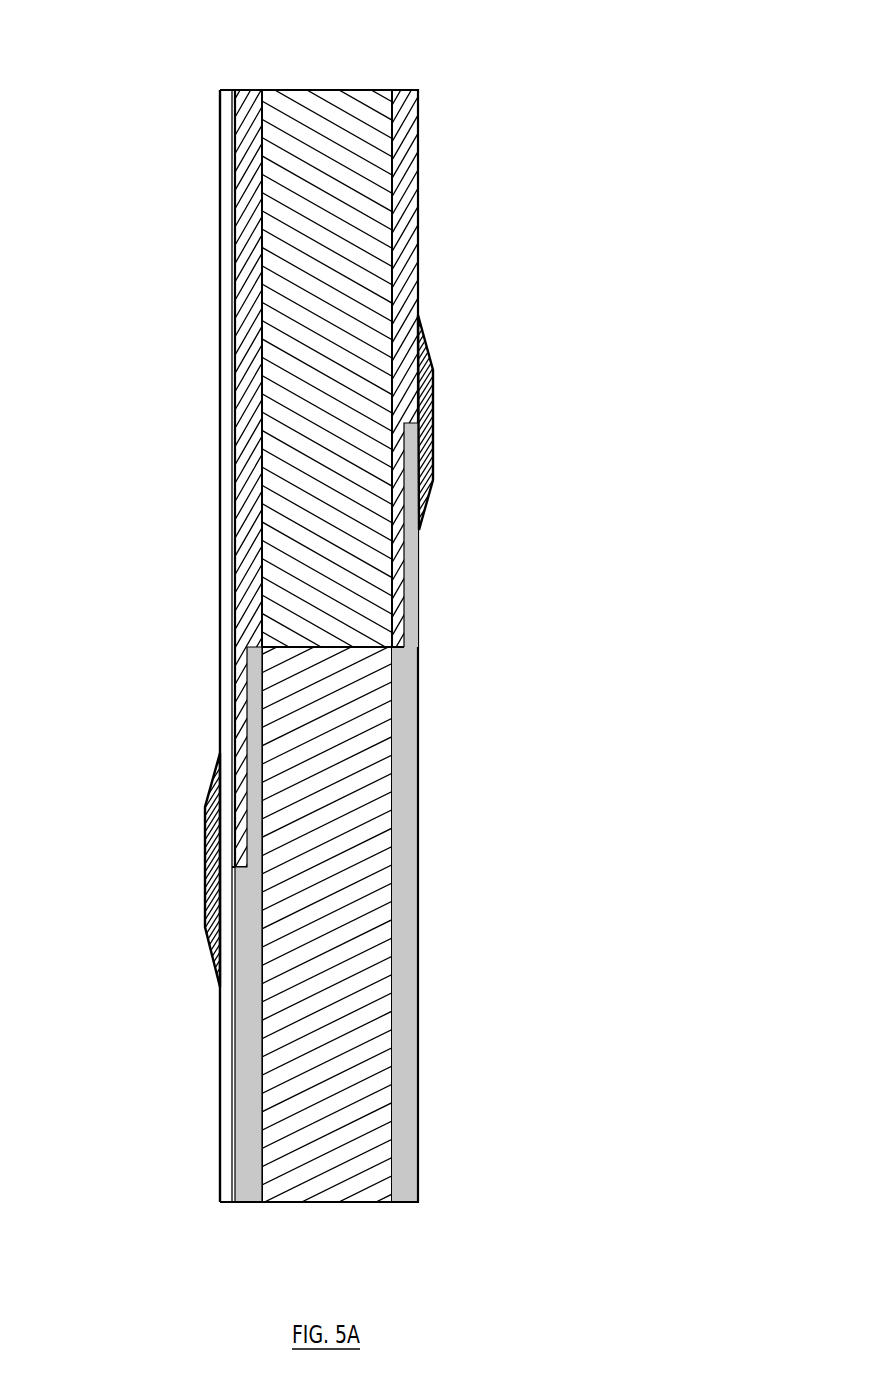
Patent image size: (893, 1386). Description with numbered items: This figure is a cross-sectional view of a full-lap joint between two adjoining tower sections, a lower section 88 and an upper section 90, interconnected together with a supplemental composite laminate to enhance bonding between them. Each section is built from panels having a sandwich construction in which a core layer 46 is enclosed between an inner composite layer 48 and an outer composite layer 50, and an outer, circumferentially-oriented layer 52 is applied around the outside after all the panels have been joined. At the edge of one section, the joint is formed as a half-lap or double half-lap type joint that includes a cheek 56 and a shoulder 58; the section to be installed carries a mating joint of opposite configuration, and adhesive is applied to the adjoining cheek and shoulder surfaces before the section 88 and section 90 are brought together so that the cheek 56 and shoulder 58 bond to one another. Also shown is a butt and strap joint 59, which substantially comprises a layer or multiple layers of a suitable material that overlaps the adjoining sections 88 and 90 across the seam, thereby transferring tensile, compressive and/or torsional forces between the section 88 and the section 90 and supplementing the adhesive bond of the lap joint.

The core layer 46 is at (346, 148).
The inner composite layer 48 is at (413, 1139).
The outer composite layer 50 is at (257, 1160).
The outer circumferentially-oriented layer 52 is at (227, 687).
The cheek 56 is at (232, 628).
The shoulder 58 is at (347, 650).
The butt and strap joint 59 is at (436, 424).
The section 88 is at (420, 1017).
The section 90 is at (422, 240).